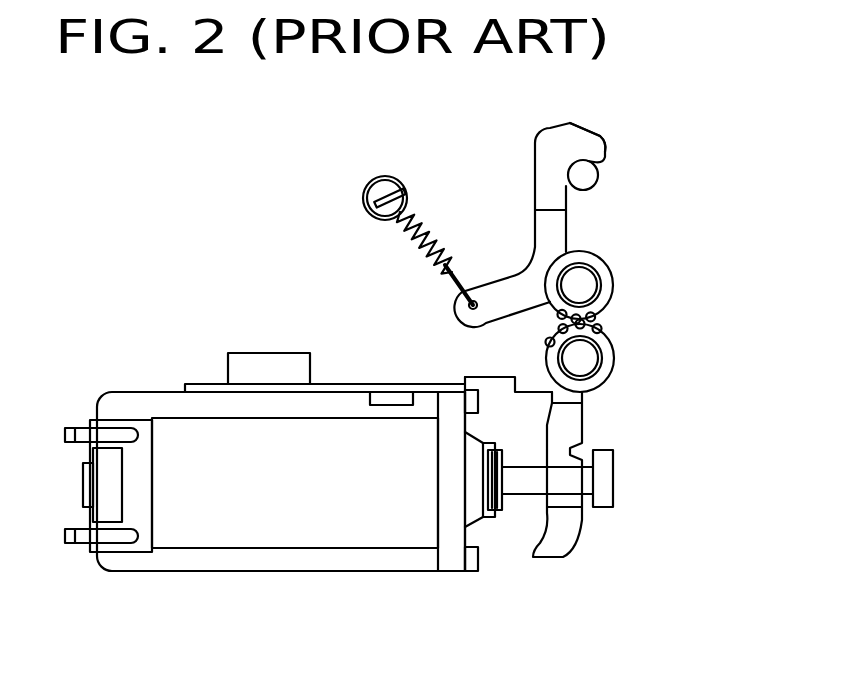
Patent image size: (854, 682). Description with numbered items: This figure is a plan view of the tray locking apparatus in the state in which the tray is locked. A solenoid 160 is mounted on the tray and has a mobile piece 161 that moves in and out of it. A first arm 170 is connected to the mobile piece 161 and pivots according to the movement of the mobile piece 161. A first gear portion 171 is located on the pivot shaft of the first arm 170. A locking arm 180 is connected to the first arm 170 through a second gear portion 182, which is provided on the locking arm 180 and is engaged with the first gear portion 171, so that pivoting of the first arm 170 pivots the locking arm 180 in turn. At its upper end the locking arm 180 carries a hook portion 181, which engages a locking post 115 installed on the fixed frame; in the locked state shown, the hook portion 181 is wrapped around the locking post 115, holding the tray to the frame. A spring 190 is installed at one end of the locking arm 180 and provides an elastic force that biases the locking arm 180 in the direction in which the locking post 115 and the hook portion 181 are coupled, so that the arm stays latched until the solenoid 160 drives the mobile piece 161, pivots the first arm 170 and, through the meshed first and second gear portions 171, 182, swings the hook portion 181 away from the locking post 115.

The locking post 115 is at (590, 180).
The solenoid 160 is at (342, 571).
The mobile piece 161 is at (605, 487).
The first arm 170 is at (628, 422).
The first gear portion 171 is at (610, 365).
The locking arm 180 is at (490, 175).
The hook portion 181 is at (594, 146).
The second gear portion 182 is at (614, 283).
The spring 190 is at (393, 232).